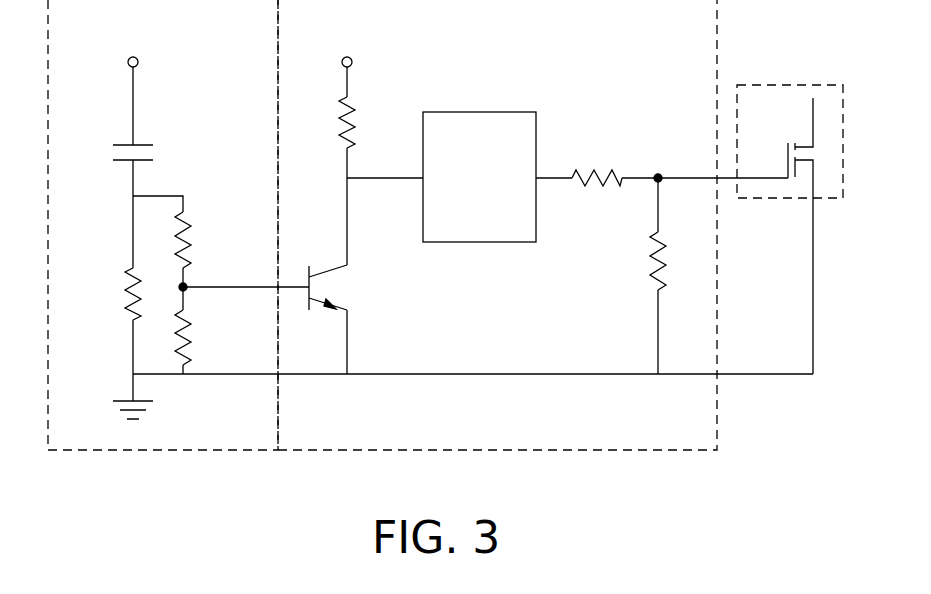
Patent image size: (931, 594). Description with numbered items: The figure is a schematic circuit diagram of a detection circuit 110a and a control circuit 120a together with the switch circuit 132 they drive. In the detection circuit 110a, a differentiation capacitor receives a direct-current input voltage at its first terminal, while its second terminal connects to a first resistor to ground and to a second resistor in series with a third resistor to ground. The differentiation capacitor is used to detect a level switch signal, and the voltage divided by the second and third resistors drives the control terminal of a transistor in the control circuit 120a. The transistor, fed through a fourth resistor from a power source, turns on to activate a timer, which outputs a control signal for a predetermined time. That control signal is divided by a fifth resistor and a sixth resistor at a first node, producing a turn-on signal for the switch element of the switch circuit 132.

The detection circuit 110a is at (162, 452).
The control circuit 120a is at (644, 452).
The switch circuit 132 is at (773, 82).